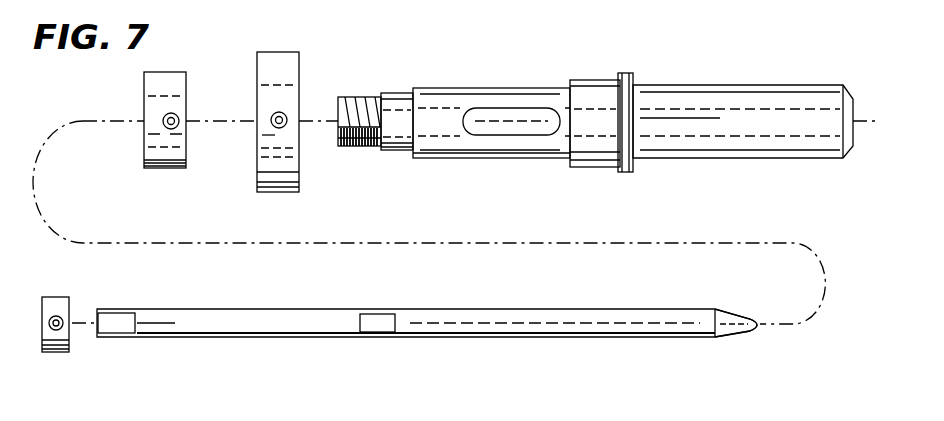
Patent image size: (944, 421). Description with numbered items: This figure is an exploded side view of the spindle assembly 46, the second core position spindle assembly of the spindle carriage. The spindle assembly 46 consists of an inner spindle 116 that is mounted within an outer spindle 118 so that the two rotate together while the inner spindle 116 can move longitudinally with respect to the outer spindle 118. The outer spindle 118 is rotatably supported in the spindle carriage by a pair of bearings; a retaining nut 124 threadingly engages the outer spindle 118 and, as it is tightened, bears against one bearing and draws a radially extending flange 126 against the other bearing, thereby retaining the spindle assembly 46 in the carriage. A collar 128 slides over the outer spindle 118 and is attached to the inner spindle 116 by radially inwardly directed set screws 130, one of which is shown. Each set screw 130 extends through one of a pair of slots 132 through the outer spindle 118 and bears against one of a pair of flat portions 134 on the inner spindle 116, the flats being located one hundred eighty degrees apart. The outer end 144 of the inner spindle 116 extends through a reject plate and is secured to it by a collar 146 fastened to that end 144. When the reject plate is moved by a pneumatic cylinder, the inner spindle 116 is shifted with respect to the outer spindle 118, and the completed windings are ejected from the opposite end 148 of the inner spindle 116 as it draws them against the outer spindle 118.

The spindle assembly 46 is at (497, 81).
The inner spindle 116 is at (482, 330).
The outer spindle 118 is at (697, 150).
The retaining nut 124 is at (168, 80).
The radially extending flange 126 is at (627, 78).
The collar 128 is at (285, 65).
The set screw 130 is at (273, 117).
The slot 132 is at (508, 131).
The flat portion 134 is at (380, 323).
The outer end of the inner spindle 144 is at (122, 325).
The collar 146 is at (56, 303).
The opposite end of the inner spindle 148 is at (740, 330).